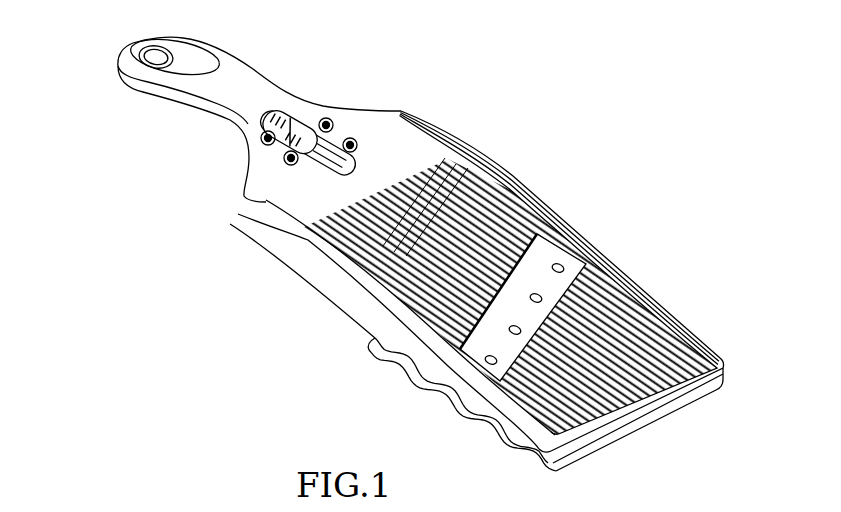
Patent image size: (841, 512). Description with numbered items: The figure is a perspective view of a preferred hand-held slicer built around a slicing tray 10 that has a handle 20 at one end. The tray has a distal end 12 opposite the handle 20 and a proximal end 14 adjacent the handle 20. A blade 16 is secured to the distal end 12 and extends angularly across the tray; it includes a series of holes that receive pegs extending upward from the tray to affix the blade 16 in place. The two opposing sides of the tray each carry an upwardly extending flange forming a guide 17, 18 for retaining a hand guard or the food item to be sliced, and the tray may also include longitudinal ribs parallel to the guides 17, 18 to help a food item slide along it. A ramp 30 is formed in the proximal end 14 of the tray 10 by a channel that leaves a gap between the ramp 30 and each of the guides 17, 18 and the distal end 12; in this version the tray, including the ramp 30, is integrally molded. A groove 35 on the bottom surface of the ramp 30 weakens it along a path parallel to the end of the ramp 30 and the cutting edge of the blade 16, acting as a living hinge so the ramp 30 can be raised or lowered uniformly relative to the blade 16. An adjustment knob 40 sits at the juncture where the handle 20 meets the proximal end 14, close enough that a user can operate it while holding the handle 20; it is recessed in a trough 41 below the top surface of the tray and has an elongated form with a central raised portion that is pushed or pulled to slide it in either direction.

The slicing tray 10 is at (613, 227).
The distal end 12 is at (510, 264).
The proximal end 14 is at (382, 140).
The blade 16 is at (522, 263).
The guide 17 is at (672, 300).
The guide 18 is at (462, 374).
The handle 20 is at (148, 94).
The ramp 30 is at (460, 217).
The groove 35 is at (380, 251).
The adjustment knob 40 is at (264, 146).
The trough 41 is at (330, 122).